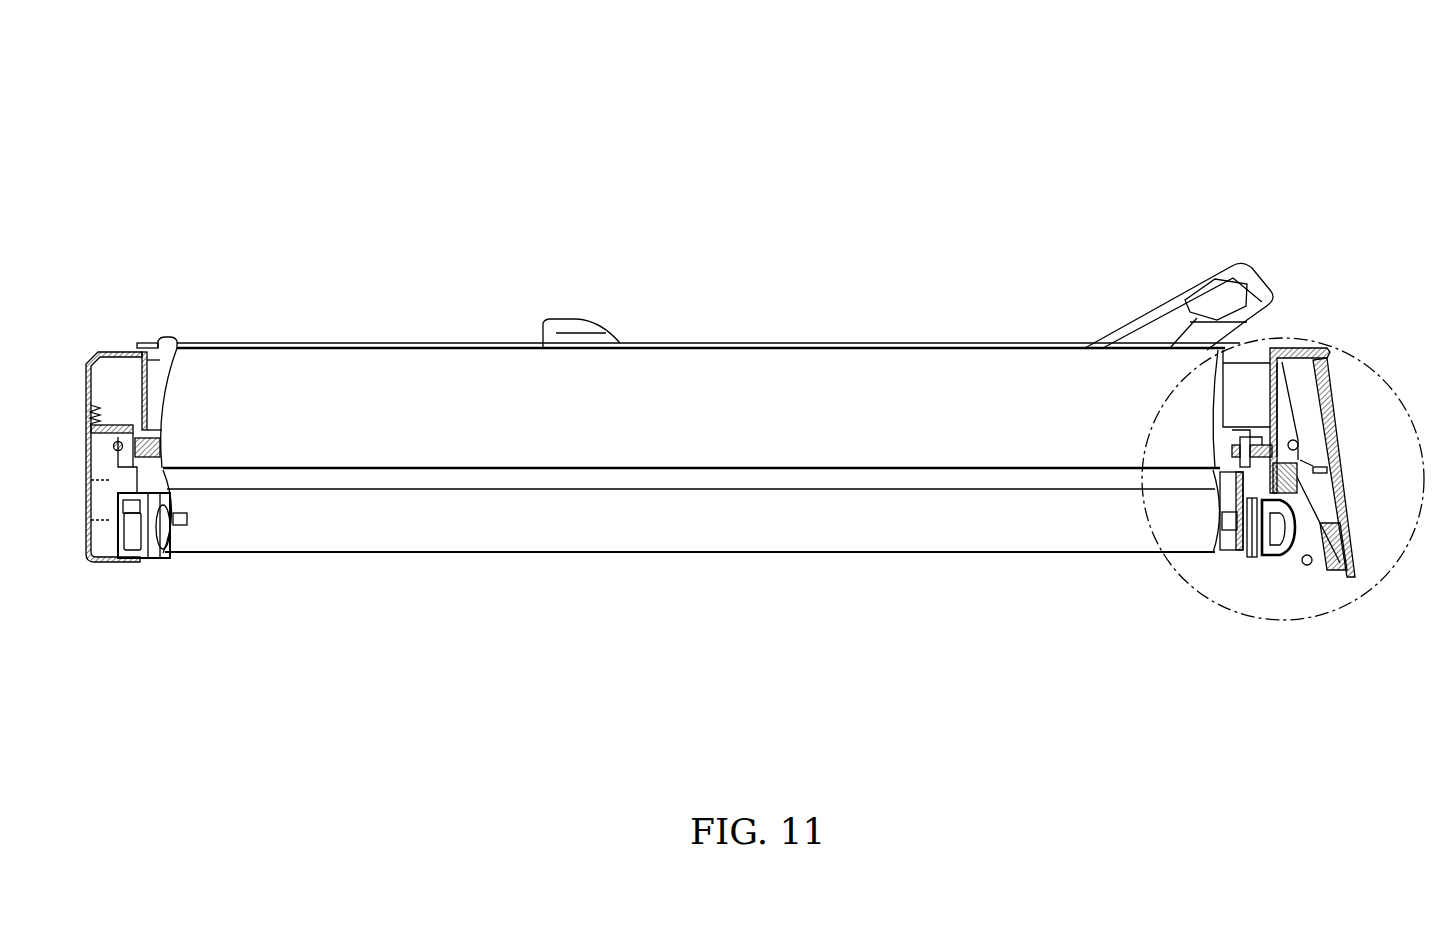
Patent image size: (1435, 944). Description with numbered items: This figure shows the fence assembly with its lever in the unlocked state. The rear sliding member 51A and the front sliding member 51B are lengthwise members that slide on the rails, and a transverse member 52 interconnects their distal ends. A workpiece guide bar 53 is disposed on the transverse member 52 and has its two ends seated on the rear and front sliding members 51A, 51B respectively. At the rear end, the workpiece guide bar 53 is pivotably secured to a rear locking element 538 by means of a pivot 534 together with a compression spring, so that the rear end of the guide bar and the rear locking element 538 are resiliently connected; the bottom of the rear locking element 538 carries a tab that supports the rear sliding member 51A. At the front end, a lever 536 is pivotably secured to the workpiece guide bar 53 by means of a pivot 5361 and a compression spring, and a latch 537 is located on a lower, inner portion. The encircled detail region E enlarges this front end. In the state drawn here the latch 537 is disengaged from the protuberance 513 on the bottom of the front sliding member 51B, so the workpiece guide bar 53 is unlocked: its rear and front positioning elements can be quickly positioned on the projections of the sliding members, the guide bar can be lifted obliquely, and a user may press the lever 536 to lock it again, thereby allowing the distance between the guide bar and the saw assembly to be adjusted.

The workpiece guide bar 53 is at (707, 372).
The transverse member 52 is at (722, 530).
The rear locking element 538 is at (80, 540).
The pivot 534 is at (124, 350).
The rear sliding member 51A is at (133, 545).
The pivot 5361 is at (1312, 353).
The front sliding member 51B is at (1262, 567).
The protuberance 513 is at (1293, 560).
The lever 536 is at (1360, 560).
The latch 537 is at (1310, 560).
The detail region E is at (1283, 337).